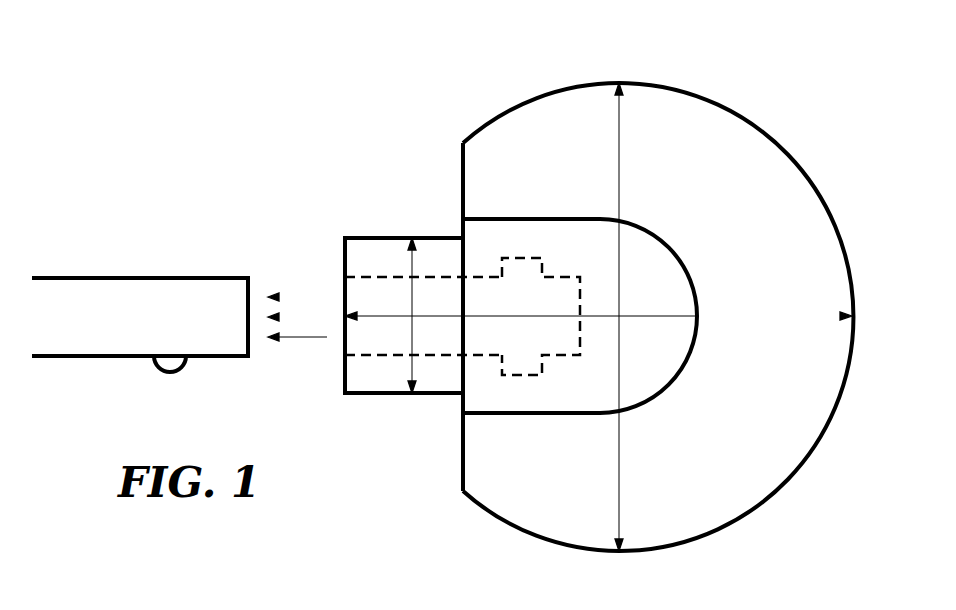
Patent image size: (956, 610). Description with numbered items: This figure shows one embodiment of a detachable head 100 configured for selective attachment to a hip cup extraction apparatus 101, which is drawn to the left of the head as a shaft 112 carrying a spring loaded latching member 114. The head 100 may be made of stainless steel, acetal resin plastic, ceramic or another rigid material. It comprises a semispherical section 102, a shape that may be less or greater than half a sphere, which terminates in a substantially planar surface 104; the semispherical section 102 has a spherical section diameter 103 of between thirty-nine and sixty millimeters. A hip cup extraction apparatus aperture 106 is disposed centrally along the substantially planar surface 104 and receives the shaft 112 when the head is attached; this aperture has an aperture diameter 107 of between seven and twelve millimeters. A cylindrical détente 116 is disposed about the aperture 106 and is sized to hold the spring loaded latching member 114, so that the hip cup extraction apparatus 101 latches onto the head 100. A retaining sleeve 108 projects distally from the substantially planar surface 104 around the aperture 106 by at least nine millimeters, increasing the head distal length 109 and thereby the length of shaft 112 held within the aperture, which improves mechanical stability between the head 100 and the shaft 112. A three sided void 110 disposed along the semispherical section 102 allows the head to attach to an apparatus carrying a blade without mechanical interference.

The head 100 is at (750, 100).
The hip cup extraction apparatus 101 is at (177, 254).
The semispherical section 102 is at (836, 208).
The spherical section diameter 103 is at (617, 178).
The substantially planar surface 104 is at (460, 160).
The hip cup extraction apparatus aperture 106 is at (370, 337).
The aperture diameter 107 is at (405, 374).
The retaining sleeve 108 is at (385, 236).
The head distal length 109 is at (718, 318).
The three sided void 110 is at (637, 258).
The shaft 112 is at (108, 345).
The spring loaded latching member 114 is at (188, 365).
The cylindrical détente 116 is at (530, 377).